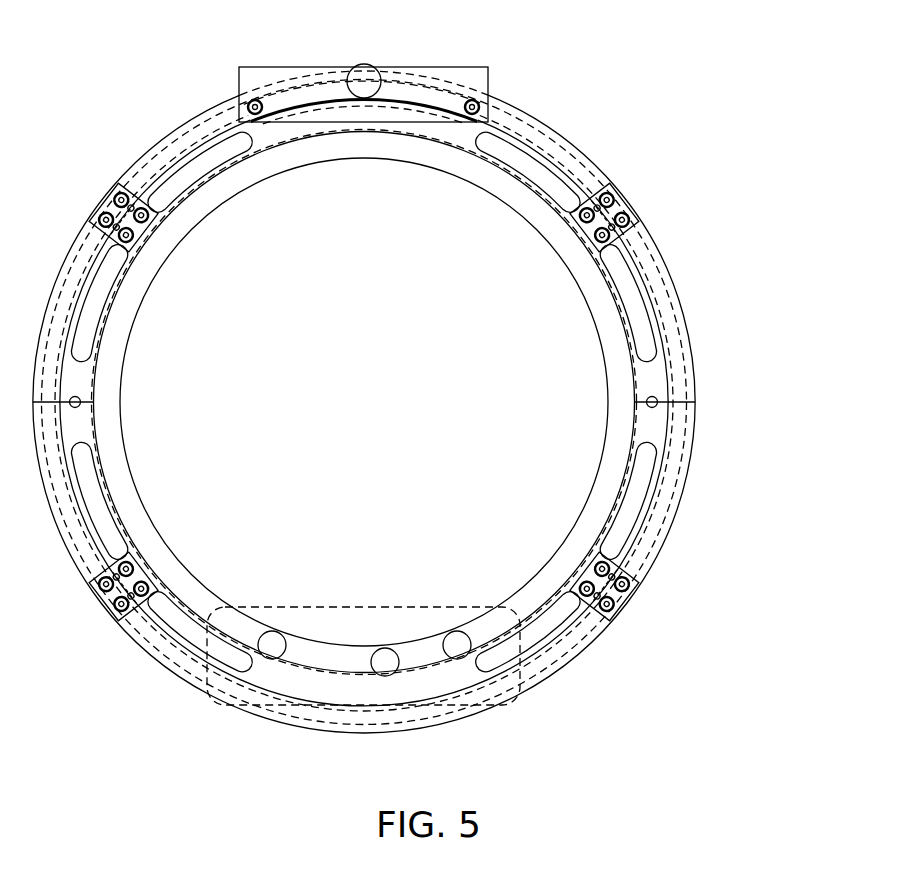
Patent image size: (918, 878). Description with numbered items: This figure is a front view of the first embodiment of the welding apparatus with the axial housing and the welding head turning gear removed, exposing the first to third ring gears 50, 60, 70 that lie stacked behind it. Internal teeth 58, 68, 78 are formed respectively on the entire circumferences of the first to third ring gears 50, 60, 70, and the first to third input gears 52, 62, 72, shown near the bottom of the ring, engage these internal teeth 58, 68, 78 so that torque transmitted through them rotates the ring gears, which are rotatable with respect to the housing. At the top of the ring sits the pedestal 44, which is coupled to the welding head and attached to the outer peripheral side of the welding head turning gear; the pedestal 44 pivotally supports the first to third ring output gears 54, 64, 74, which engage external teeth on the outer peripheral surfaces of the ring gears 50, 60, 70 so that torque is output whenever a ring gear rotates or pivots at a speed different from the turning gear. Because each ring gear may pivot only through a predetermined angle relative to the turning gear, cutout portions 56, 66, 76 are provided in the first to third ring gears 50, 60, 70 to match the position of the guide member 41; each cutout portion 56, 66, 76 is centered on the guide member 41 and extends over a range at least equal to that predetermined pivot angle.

The guide member 41 is at (622, 204).
The pedestal 44 is at (488, 81).
The first ring gear 50 is at (429, 402).
The second ring gear 60 is at (429, 402).
The third ring gear 70 is at (660, 378).
The first input gear 52 is at (271, 640).
The second input gear 62 is at (385, 652).
The third input gear 72 is at (457, 640).
The first ring output gear 54 is at (413, 55).
The second ring output gear 64 is at (413, 55).
The third ring output gear 74 is at (372, 64).
The cutout portion 56 is at (424, 401).
The cutout portion 66 is at (424, 401).
The cutout portion 76 is at (784, 258).
The internal teeth 58 is at (364, 392).
The internal teeth 68 is at (364, 392).
The internal teeth 78 is at (635, 384).